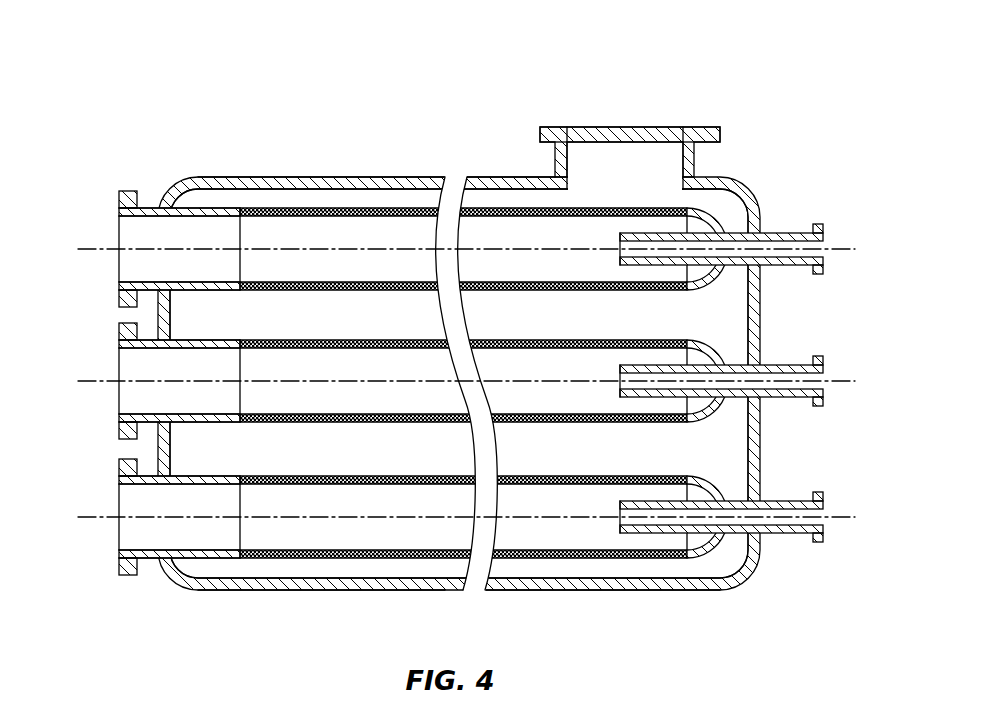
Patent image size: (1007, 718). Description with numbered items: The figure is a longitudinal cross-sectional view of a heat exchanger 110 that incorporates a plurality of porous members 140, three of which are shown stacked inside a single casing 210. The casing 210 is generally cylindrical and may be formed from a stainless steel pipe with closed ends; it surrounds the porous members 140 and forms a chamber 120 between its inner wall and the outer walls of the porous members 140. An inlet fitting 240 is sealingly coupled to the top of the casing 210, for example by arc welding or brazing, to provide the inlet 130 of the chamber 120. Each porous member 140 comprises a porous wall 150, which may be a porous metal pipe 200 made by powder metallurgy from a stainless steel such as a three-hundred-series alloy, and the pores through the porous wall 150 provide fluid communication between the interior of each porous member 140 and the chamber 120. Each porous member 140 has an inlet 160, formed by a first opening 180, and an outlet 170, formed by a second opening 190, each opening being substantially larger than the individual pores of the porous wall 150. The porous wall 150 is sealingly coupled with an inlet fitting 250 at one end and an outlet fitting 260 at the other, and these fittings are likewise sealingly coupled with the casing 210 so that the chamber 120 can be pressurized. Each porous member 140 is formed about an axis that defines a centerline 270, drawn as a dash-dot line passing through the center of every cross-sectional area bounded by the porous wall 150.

The heat exchanger 110 is at (475, 342).
The chamber 120 is at (487, 200).
The inlet 130 is at (657, 152).
The porous member 140 is at (236, 569).
The porous wall 150 is at (530, 289).
The inlet 160 is at (817, 516).
The outlet 170 is at (143, 531).
The first opening 180 is at (617, 524).
The second opening 190 is at (240, 527).
The porous metal pipe 200 is at (413, 203).
The casing 210 is at (388, 593).
The inlet fitting 240 is at (611, 124).
The inlet fitting 250 is at (792, 551).
The outlet fitting 260 is at (107, 491).
The centerline 270 is at (402, 517).